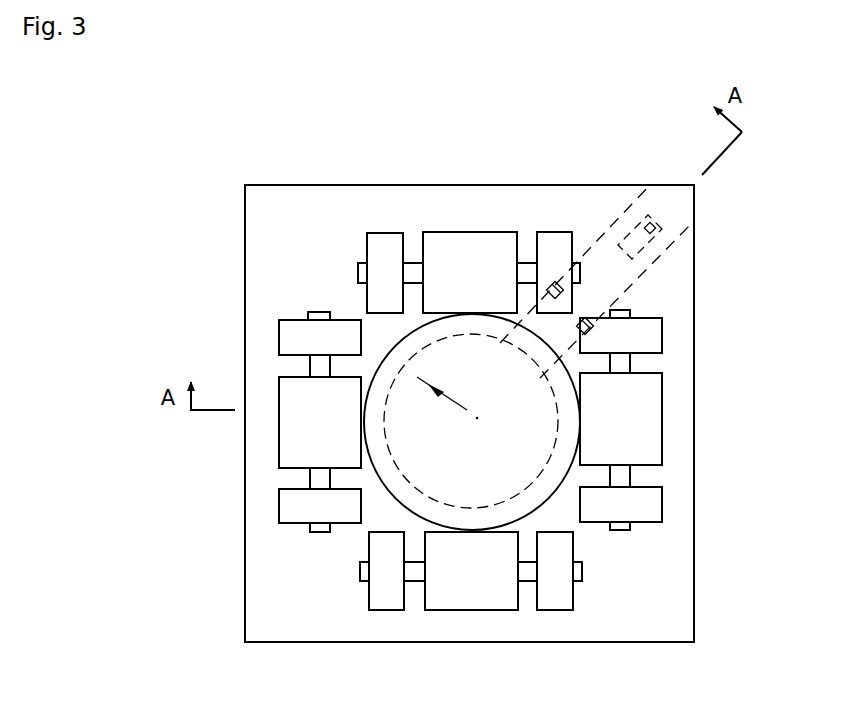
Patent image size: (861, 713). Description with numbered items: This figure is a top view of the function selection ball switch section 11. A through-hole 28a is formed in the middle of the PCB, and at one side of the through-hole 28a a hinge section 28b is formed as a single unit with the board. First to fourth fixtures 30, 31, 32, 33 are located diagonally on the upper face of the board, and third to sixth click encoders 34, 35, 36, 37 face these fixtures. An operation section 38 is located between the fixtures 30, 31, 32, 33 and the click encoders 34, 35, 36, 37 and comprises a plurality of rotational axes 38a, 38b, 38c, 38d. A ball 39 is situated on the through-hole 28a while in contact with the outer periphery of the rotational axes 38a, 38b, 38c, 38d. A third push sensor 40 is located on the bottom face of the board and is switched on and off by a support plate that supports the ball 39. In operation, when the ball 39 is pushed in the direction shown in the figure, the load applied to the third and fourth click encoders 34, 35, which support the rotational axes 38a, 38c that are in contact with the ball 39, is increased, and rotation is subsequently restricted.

The function selection ball switch section 11 is at (742, 186).
The through-hole 28a is at (398, 467).
The hinge section 28b is at (577, 312).
The first fixture 30 is at (285, 342).
The second fixture 31 is at (563, 240).
The third fixture 32 is at (652, 504).
The fourth fixture 33 is at (386, 598).
The third click encoder 34 is at (283, 508).
The fourth click encoder 35 is at (393, 240).
The fifth click encoder 36 is at (645, 338).
The sixth click encoder 37 is at (556, 597).
The operation section 38 is at (334, 554).
The rotational axis 38a is at (283, 458).
The rotational axis 38b is at (475, 240).
The rotational axis 38c is at (650, 430).
The rotational axis 38d is at (478, 597).
The ball 39 is at (562, 420).
The third push sensor 40 is at (650, 222).